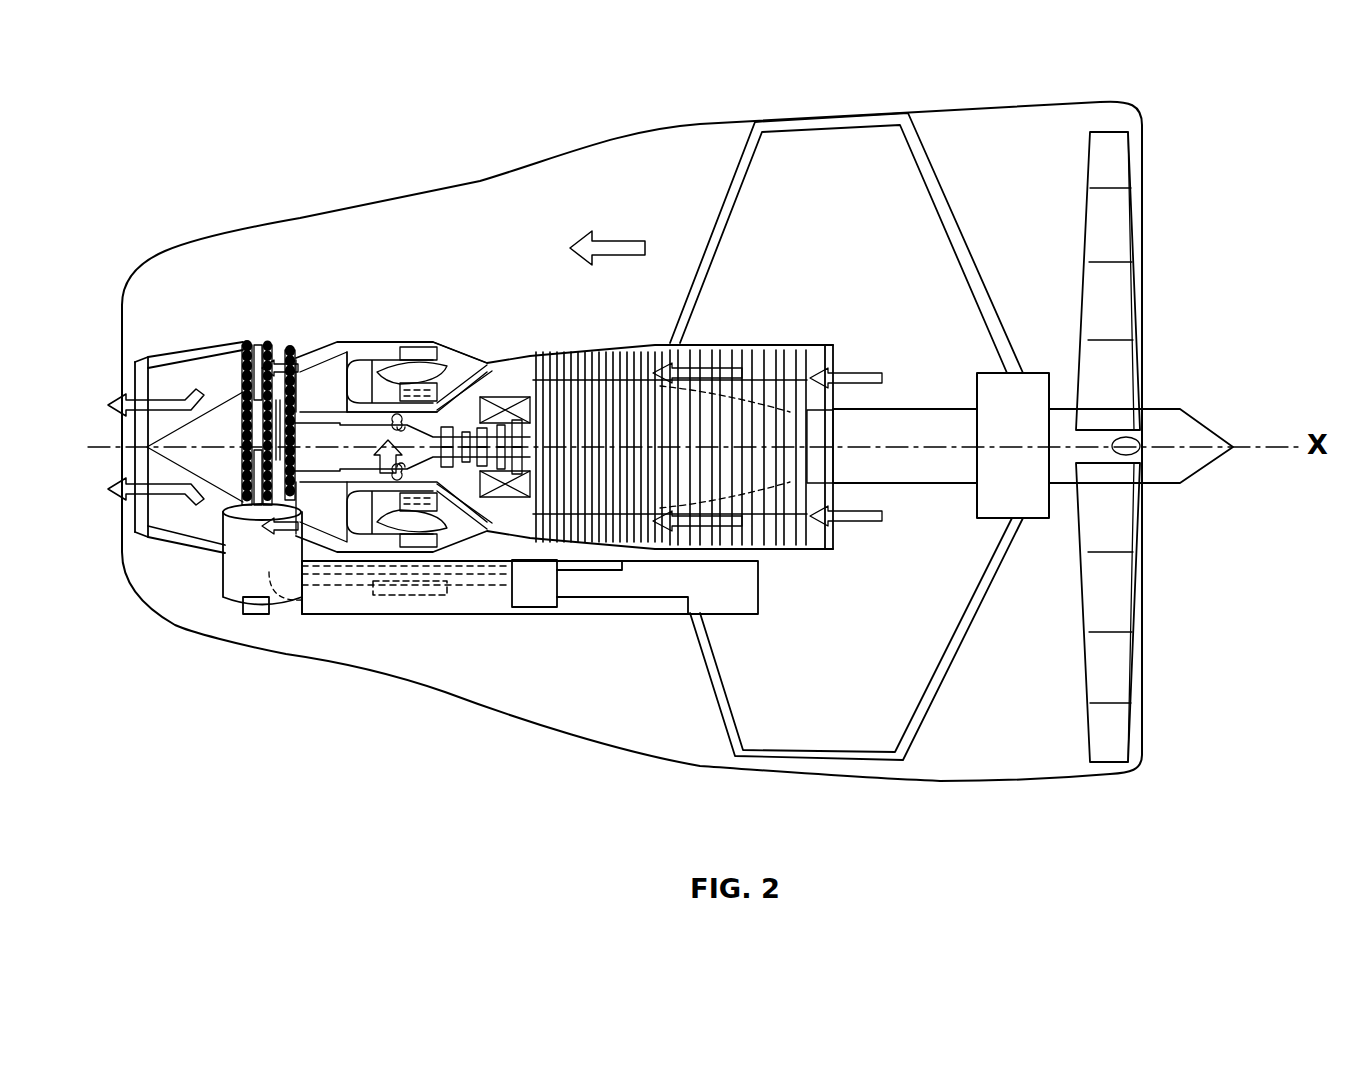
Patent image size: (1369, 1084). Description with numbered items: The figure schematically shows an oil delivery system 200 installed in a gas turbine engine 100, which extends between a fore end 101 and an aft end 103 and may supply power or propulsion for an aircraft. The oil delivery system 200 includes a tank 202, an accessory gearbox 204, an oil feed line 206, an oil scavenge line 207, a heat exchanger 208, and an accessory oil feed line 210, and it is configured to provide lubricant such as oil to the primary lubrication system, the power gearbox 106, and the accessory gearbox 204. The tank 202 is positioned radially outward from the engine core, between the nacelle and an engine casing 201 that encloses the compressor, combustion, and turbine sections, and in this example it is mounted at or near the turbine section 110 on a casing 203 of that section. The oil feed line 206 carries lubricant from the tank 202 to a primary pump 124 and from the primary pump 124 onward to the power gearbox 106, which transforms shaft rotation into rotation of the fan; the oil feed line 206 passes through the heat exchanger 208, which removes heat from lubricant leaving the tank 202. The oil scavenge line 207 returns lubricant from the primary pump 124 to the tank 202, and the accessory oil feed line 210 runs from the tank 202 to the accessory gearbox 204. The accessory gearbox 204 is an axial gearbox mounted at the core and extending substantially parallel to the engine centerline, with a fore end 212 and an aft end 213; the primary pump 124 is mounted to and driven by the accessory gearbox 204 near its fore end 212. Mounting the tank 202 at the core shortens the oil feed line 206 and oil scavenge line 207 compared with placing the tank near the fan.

The gas turbine engine 100 is at (203, 187).
The fore end 101 is at (1166, 447).
The aft end 103 is at (163, 398).
The power gearbox 106 is at (977, 511).
The turbine section 110 is at (548, 411).
The primary pump 124 is at (530, 608).
The oil delivery system 200 is at (401, 774).
The engine casing 201 is at (425, 342).
The tank 202 is at (222, 558).
The casing 203 is at (262, 344).
The accessory gearbox 204 is at (524, 615).
The oil feed line 206 is at (312, 598).
The oil scavenge line 207 is at (355, 580).
The heat exchanger 208 is at (440, 597).
The accessory oil feed line 210 is at (243, 605).
The fore end 212 is at (846, 436).
The aft end 213 is at (632, 441).